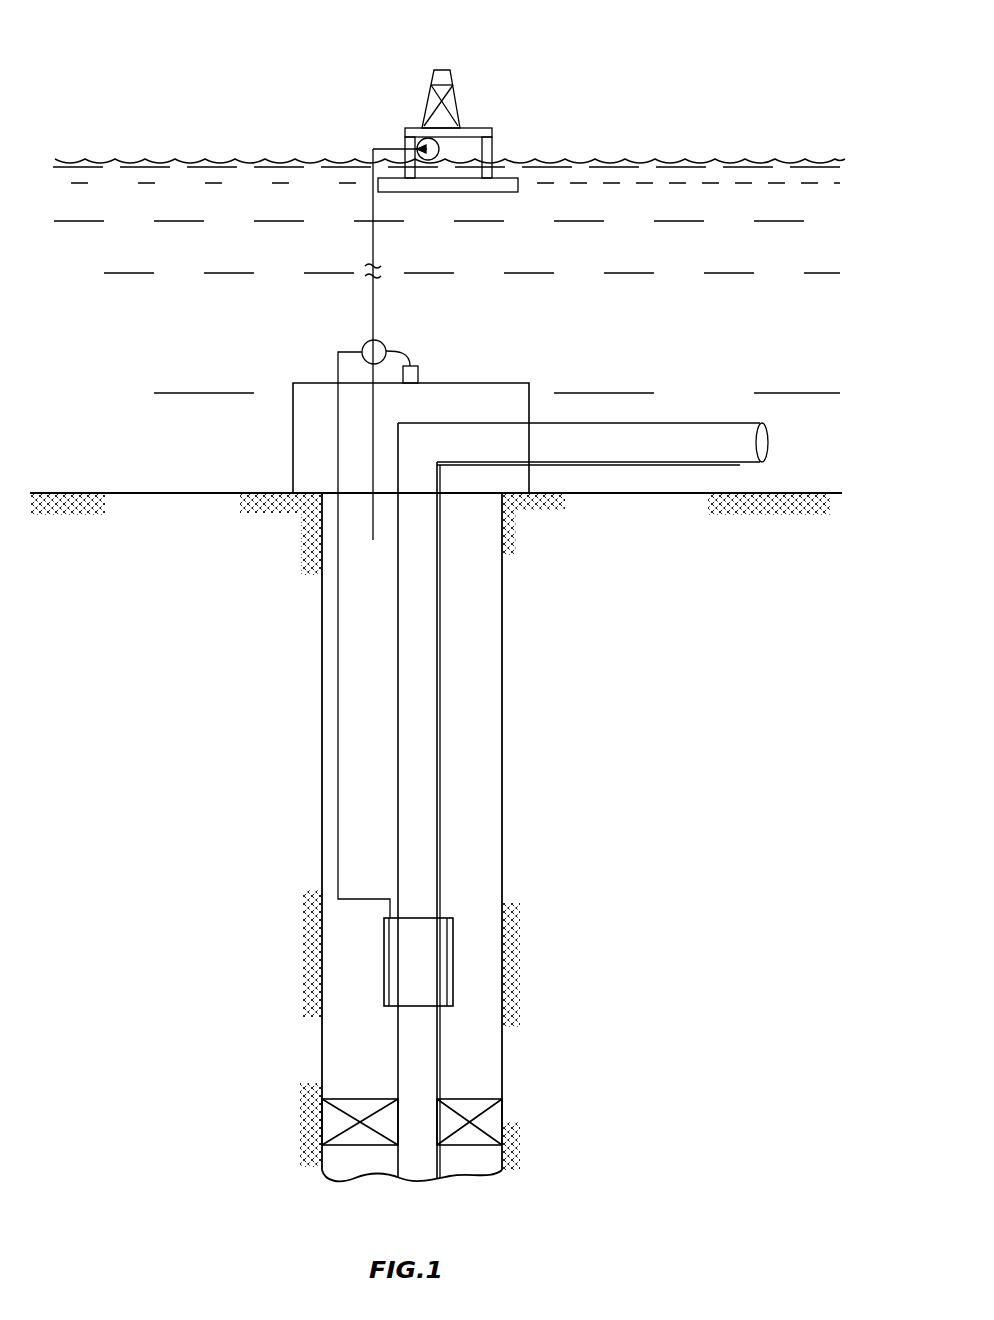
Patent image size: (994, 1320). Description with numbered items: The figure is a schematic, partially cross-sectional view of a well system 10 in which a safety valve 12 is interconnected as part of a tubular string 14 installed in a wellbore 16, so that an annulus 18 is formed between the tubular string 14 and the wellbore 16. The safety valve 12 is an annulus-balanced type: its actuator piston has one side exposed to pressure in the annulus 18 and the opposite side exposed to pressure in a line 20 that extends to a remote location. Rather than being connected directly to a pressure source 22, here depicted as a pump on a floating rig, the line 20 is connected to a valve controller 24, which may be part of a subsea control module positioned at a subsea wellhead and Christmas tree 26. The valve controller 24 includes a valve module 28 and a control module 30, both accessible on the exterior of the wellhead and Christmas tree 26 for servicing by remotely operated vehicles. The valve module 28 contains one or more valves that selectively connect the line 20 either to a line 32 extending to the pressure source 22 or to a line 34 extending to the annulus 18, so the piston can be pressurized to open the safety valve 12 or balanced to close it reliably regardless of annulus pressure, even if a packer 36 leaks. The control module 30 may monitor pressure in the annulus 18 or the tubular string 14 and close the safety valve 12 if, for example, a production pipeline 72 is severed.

The system 10 is at (690, 65).
The safety valve 12 is at (452, 948).
The tubular string 14 is at (443, 727).
The wellbore 16 is at (503, 797).
The annulus 18 is at (474, 848).
The line 20 is at (337, 724).
The pressure source 22 is at (436, 158).
The valve controller 24 is at (423, 337).
The wellhead and Christmas tree 26 is at (530, 390).
The valve module 28 is at (364, 343).
The control module 30 is at (419, 373).
The line 32 is at (373, 201).
The line 34 is at (372, 514).
The packer 36 is at (348, 1099).
The production pipeline 72 is at (707, 422).